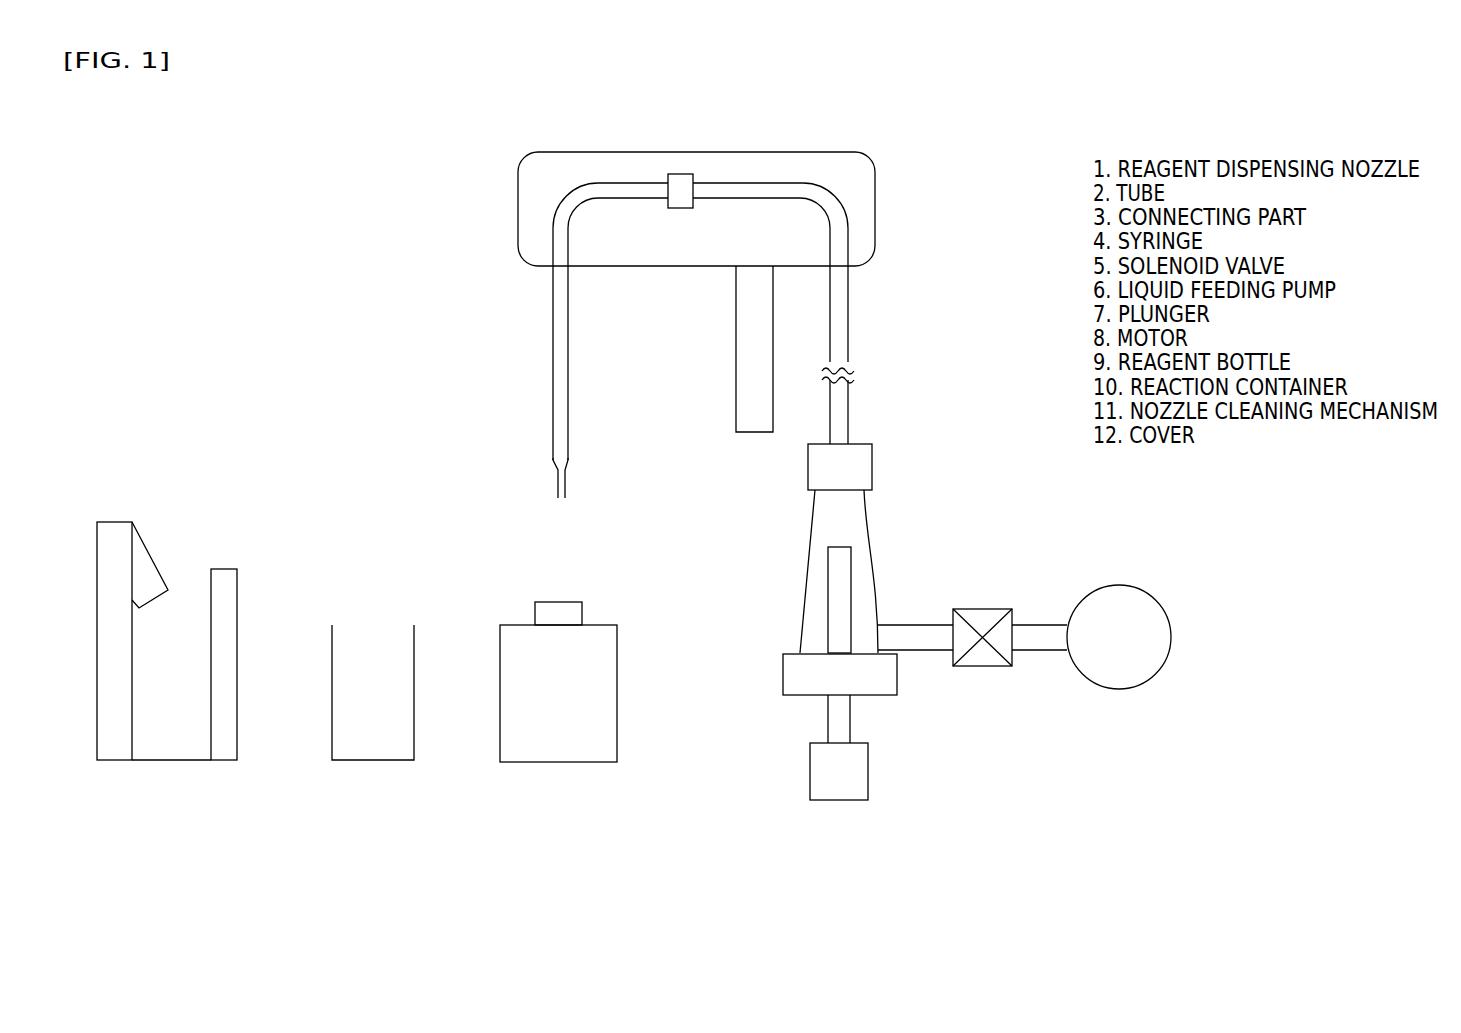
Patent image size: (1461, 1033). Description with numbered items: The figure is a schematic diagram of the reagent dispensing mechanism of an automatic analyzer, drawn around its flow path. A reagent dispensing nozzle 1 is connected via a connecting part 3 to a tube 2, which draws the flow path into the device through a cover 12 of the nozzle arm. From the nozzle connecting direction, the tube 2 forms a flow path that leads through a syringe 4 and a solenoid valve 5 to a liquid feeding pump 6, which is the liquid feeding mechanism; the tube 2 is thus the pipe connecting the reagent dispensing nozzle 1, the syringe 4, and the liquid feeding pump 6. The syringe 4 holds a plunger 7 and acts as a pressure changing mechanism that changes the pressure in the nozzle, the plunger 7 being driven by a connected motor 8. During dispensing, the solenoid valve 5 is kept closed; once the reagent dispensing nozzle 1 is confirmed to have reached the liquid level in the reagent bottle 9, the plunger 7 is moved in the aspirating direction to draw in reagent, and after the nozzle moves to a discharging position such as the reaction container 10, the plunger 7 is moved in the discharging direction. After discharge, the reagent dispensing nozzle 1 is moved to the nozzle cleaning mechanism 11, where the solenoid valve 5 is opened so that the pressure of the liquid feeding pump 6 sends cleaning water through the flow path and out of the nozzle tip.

The reagent dispensing nozzle 1 is at (555, 375).
The tube 2 is at (745, 183).
The connecting part 3 is at (680, 177).
The syringe 4 is at (876, 540).
The solenoid valve 5 is at (988, 666).
The liquid feeding pump 6 is at (1123, 690).
The plunger 7 is at (828, 601).
The motor 8 is at (813, 778).
The reagent bottle 9 is at (603, 625).
The reaction container 10 is at (340, 645).
The nozzle cleaning mechanism 11 is at (743, 410).
The cover 12 is at (876, 184).